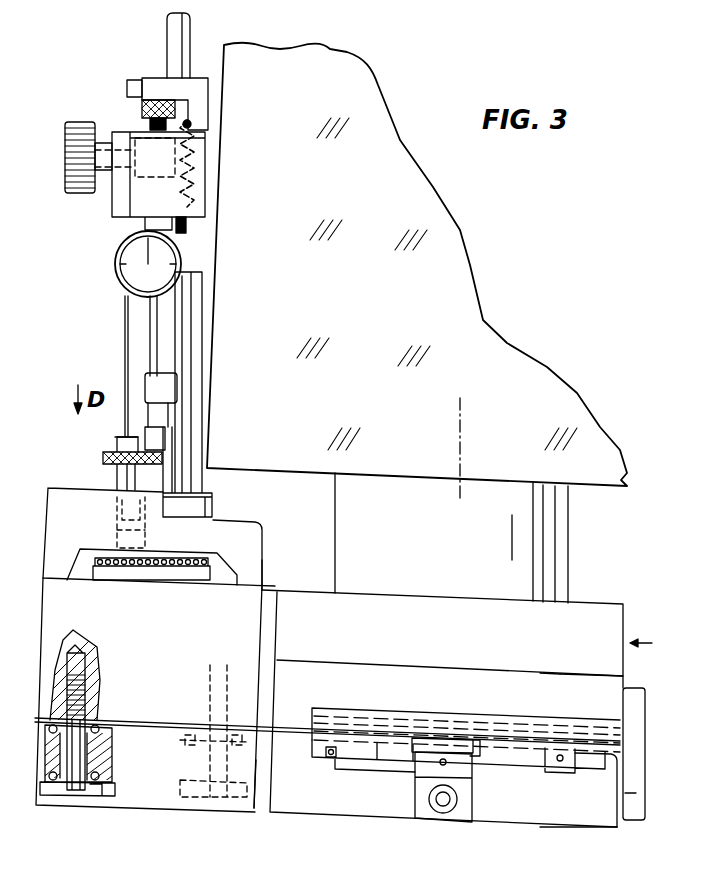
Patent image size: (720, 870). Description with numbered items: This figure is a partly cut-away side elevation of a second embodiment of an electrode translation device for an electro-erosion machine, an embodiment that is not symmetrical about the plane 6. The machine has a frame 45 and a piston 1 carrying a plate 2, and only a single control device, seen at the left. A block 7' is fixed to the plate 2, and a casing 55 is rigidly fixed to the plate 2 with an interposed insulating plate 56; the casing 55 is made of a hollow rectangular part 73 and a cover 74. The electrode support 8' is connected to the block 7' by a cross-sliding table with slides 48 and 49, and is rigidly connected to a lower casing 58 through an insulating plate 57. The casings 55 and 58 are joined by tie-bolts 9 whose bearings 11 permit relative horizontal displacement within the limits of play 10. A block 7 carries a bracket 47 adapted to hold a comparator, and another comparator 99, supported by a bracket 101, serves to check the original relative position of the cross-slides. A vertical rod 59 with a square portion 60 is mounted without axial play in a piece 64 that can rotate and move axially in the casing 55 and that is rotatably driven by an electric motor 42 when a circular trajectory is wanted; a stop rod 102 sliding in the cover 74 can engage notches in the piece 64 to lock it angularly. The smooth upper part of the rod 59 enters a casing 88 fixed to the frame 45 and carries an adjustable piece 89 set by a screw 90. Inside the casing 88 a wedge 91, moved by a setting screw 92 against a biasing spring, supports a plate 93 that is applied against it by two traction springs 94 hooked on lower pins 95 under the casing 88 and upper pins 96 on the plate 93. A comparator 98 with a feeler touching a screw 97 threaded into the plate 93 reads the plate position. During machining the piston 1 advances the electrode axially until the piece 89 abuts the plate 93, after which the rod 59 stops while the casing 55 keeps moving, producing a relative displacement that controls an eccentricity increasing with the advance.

The piston 1 is at (451, 538).
The plate 2 is at (442, 708).
The plane 6 is at (460, 415).
The block 7' is at (591, 692).
The block 7 is at (550, 673).
The electrode support 8' is at (588, 808).
The tie-bolts 9 is at (98, 797).
The play 10 is at (66, 795).
The bearings 11 is at (327, 748).
The electric motor 42 is at (128, 325).
The frame 45 is at (417, 264).
The bracket 47 is at (636, 702).
The slide 48 is at (385, 713).
The slide 49 is at (326, 753).
The casing 55 is at (176, 702).
The insulating plate 56 is at (264, 600).
The insulating plate 57 is at (259, 798).
The lower casing 58 is at (38, 785).
The vertical rod 59 is at (166, 38).
The square portion 60 is at (178, 413).
The piece 64 is at (143, 582).
The hollow rectangular part 73 is at (149, 695).
The cover 74 is at (159, 537).
The casing 88 is at (138, 195).
The adjustable piece 89 is at (192, 90).
The screw 90 is at (130, 80).
The wedge 91 is at (206, 150).
The setting screw 92 is at (80, 194).
The plate 93 is at (150, 124).
The traction springs 94 is at (206, 193).
The pins 95 is at (190, 228).
The pins 96 is at (192, 120).
The screw 97 is at (142, 108).
The comparator 98 is at (121, 273).
The comparator 99 is at (455, 740).
The bracket 101 is at (465, 818).
The stop rod 102 is at (105, 457).